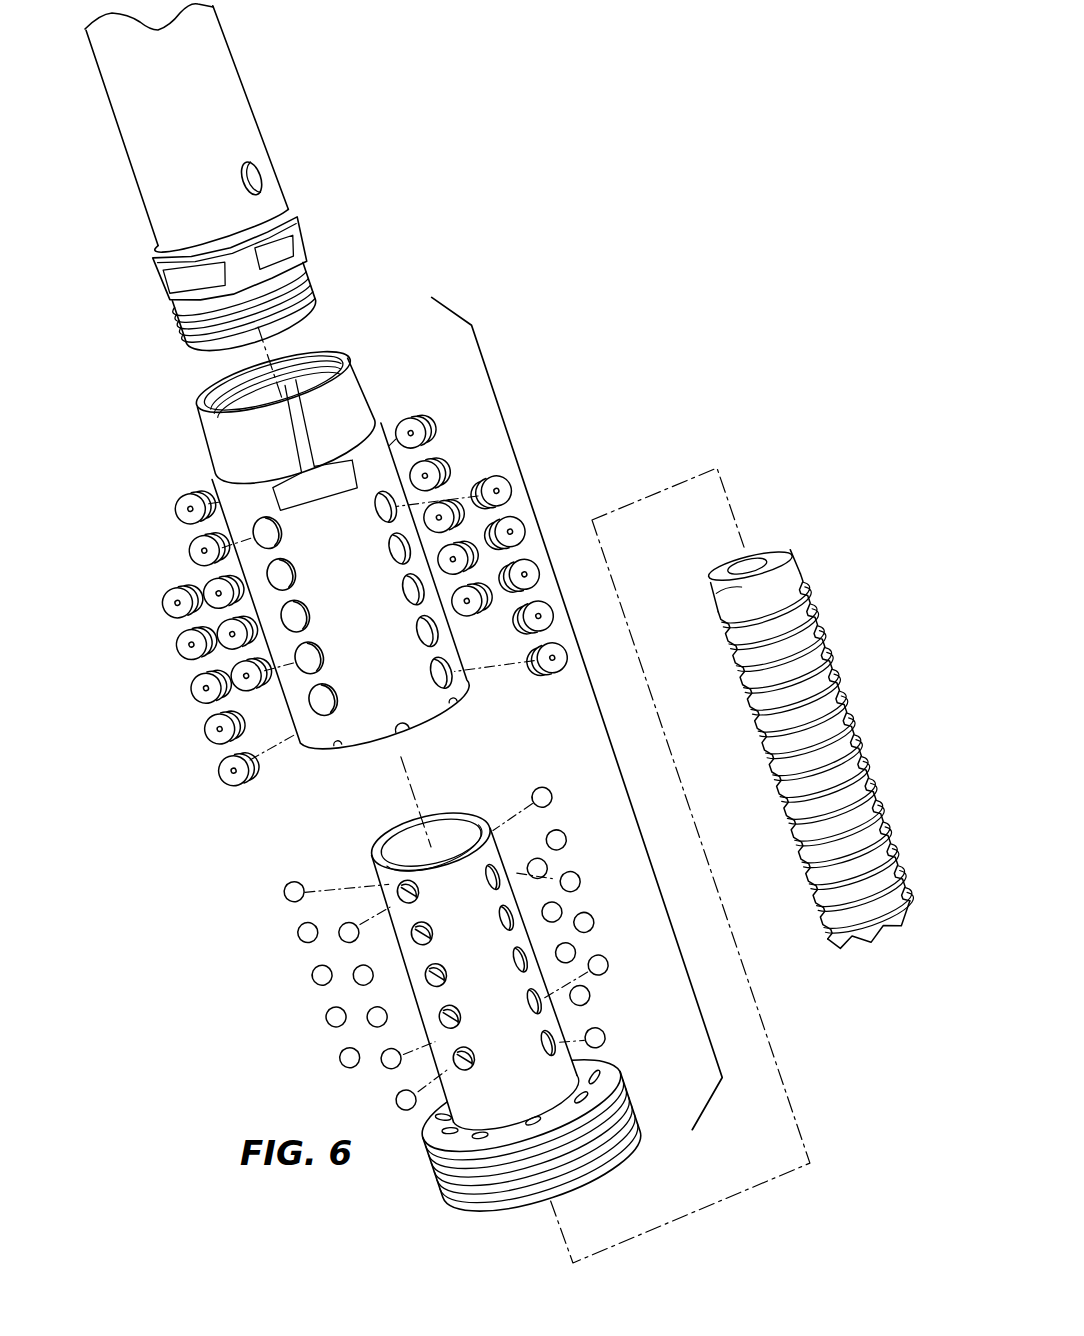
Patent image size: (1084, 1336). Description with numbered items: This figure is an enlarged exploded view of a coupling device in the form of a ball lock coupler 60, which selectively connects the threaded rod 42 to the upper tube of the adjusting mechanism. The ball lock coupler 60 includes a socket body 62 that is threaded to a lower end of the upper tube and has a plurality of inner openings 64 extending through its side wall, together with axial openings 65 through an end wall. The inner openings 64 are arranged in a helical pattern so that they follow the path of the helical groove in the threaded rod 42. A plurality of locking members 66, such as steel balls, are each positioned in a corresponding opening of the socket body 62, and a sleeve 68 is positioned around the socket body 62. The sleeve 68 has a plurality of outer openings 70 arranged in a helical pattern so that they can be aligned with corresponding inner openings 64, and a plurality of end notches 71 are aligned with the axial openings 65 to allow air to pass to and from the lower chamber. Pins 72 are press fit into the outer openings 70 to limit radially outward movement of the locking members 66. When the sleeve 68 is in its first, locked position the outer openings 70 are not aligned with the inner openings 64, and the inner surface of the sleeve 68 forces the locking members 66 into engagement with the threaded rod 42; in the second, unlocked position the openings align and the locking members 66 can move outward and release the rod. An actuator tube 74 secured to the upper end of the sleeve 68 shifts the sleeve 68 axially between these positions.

The threaded rod 42 is at (800, 603).
The ball lock coupler 60 is at (488, 390).
The socket body 62 is at (560, 1063).
The inner openings 64 is at (423, 977).
The axial openings 65 is at (445, 1131).
The locking members 66 is at (296, 936).
The sleeve 68 is at (378, 713).
The outer openings 70 is at (450, 684).
The end notches 71 is at (418, 728).
The pins 72 is at (193, 690).
The actuator tube 74 is at (218, 73).